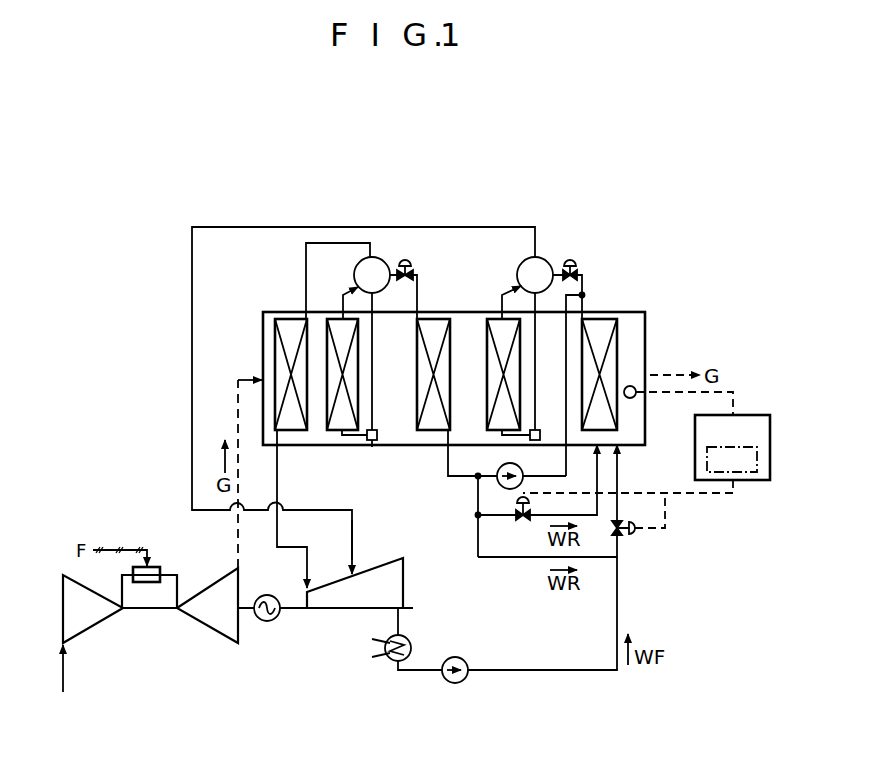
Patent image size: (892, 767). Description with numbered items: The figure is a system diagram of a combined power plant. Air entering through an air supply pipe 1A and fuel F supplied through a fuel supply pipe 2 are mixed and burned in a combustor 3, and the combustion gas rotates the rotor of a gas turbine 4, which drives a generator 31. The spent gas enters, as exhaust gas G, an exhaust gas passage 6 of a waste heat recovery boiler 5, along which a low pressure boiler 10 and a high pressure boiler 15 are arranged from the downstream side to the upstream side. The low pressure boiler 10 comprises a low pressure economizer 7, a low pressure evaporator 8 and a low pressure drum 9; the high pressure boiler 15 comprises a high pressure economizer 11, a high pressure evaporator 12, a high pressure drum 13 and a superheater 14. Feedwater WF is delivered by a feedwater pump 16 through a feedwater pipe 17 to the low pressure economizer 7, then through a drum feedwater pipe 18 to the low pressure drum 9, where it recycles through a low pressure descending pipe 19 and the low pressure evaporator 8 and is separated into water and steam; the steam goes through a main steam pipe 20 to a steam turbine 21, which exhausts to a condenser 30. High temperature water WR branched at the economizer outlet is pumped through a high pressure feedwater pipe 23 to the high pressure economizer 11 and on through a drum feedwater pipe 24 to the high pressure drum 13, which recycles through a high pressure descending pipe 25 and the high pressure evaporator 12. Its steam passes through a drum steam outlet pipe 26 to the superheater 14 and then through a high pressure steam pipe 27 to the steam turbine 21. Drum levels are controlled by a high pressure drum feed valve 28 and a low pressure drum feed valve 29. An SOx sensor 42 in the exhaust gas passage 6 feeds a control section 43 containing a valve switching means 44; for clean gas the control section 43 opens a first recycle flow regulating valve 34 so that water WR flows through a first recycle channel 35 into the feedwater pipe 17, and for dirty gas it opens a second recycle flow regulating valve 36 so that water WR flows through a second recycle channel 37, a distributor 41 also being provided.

The air inlet 1A is at (67, 668).
The fuel supply pipe 2 is at (130, 550).
The combustor 3 is at (150, 567).
The gas turbine 4 is at (202, 627).
The waste heat recovery boiler 5 is at (477, 308).
The exhaust gas passage 6 is at (281, 311).
The low pressure economizer 7 is at (617, 405).
The low pressure evaporator 8 is at (486, 378).
The low pressure drum 9 is at (538, 268).
The low pressure boiler 10 is at (583, 270).
The high pressure economizer 11 is at (417, 380).
The high pressure evaporator 12 is at (332, 432).
The high pressure drum 13 is at (392, 258).
The superheater 14 is at (296, 431).
The high pressure boiler 15 is at (380, 258).
The feedwater pump 16 is at (458, 684).
The feedwater pipe 17 is at (617, 600).
The drum feedwater pipe 18 is at (583, 295).
The low pressure descending pipe 19 is at (537, 387).
The main steam pipe 20 is at (300, 227).
The steam turbine 21 is at (338, 610).
The high pressure feedwater pipe 23 is at (458, 478).
The drum feedwater pipe 24 is at (418, 300).
The high pressure descending pipe 25 is at (373, 447).
The drum steam outlet pipe 26 is at (306, 250).
The high pressure steam pipe 27 is at (278, 492).
The high pressure drum feed valve 28 is at (408, 262).
The low pressure drum feed valve 29 is at (568, 260).
The condenser 30 is at (390, 661).
The generator 31 is at (272, 621).
The first recycle flow regulating valve 34 is at (633, 531).
The first recycle channel 35 is at (497, 557).
The second recycle flow regulating valve 36 is at (517, 500).
The second recycle channel 37 is at (503, 513).
The distributor 41 is at (371, 534).
The SOx sensor 42 is at (635, 388).
The control section 43 is at (755, 415).
The valve switching means 44 is at (750, 472).